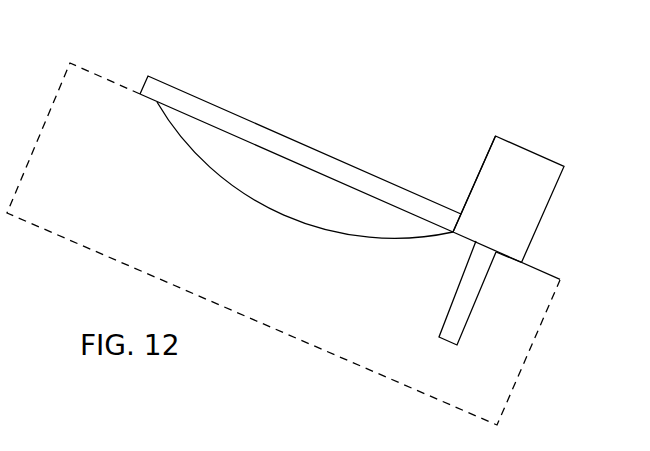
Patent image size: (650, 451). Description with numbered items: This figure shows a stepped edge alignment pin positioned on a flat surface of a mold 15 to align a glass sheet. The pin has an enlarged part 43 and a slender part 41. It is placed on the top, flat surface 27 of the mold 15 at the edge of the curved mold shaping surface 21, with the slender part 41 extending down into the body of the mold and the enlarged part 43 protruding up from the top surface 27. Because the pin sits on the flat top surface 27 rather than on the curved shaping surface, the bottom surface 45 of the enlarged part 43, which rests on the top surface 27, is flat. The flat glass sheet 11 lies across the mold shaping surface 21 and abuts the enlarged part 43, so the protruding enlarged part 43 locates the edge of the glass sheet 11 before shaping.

The mold 15 is at (110, 97).
The flat glass sheet 11 is at (261, 128).
The mold shaping surface 21 is at (308, 220).
The enlarged part 43 is at (487, 163).
The top surface 27 is at (543, 265).
The bottom surface 45 is at (506, 256).
The slender part 41 is at (465, 307).